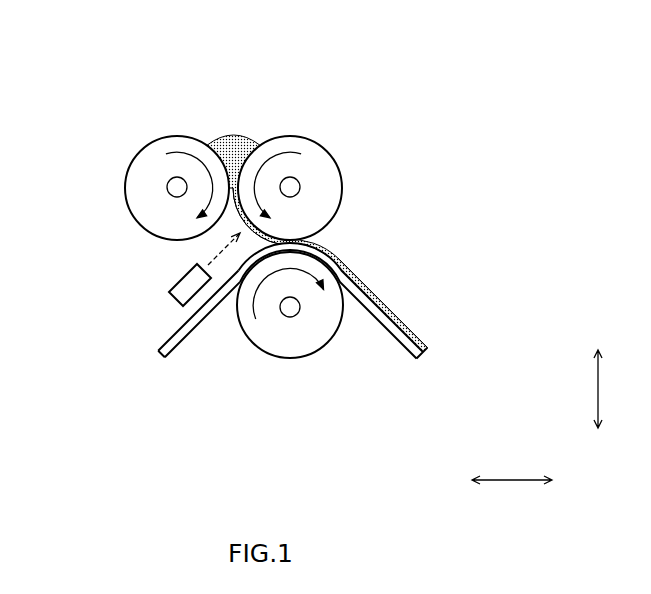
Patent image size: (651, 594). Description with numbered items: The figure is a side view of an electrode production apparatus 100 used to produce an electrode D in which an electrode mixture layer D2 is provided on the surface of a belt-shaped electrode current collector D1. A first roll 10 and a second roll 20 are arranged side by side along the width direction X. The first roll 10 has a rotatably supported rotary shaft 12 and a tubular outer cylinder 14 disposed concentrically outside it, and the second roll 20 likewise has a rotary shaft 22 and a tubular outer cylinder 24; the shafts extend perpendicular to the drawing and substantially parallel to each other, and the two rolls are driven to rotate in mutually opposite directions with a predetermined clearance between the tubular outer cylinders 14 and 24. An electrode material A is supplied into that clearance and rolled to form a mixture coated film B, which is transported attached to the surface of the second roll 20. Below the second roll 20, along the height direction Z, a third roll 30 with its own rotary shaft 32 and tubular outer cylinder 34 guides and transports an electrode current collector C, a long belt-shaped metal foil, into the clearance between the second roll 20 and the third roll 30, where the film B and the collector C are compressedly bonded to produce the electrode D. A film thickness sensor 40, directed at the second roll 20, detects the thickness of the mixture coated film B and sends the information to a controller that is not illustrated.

The electrode production apparatus 100 is at (100, 35).
The first roll 10 is at (145, 175).
The rotary shaft 12 is at (168, 184).
The tubular outer cylinder 14 is at (149, 150).
The second roll 20 is at (323, 156).
The rotary shaft 22 is at (300, 187).
The tubular outer cylinder 24 is at (330, 165).
The third roll 30 is at (310, 343).
The rotary shaft 32 is at (301, 308).
The tubular outer cylinder 34 is at (309, 348).
The film thickness sensor 40 is at (173, 302).
The electrode material A is at (230, 135).
The mixture coated film B is at (275, 234).
The electrode current collector C is at (183, 344).
The electrode D is at (370, 266).
The electrode current collector D1 is at (394, 305).
The electrode mixture layer D2 is at (421, 332).
The width direction X is at (512, 497).
The height direction Z is at (610, 389).